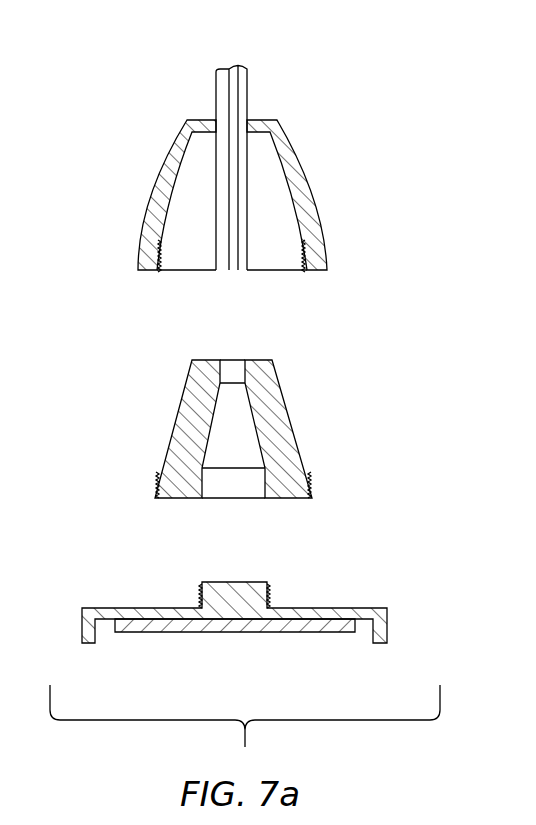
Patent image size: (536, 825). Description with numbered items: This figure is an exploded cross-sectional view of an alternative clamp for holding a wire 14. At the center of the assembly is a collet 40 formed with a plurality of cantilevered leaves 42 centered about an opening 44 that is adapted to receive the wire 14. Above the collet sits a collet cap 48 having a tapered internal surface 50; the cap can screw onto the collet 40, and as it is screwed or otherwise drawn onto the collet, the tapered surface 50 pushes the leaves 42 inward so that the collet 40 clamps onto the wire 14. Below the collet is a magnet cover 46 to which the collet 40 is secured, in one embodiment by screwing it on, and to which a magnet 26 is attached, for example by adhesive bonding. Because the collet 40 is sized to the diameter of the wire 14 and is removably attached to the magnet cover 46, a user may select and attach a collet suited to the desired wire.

The wire 14 is at (247, 68).
The collet cap 48 is at (303, 170).
The tapered internal surface 50 is at (307, 232).
The collet 40 is at (247, 407).
The cantilevered leaves 42 is at (185, 392).
The opening 44 is at (233, 365).
The magnet cover 46 is at (340, 608).
The magnet 26 is at (252, 633).